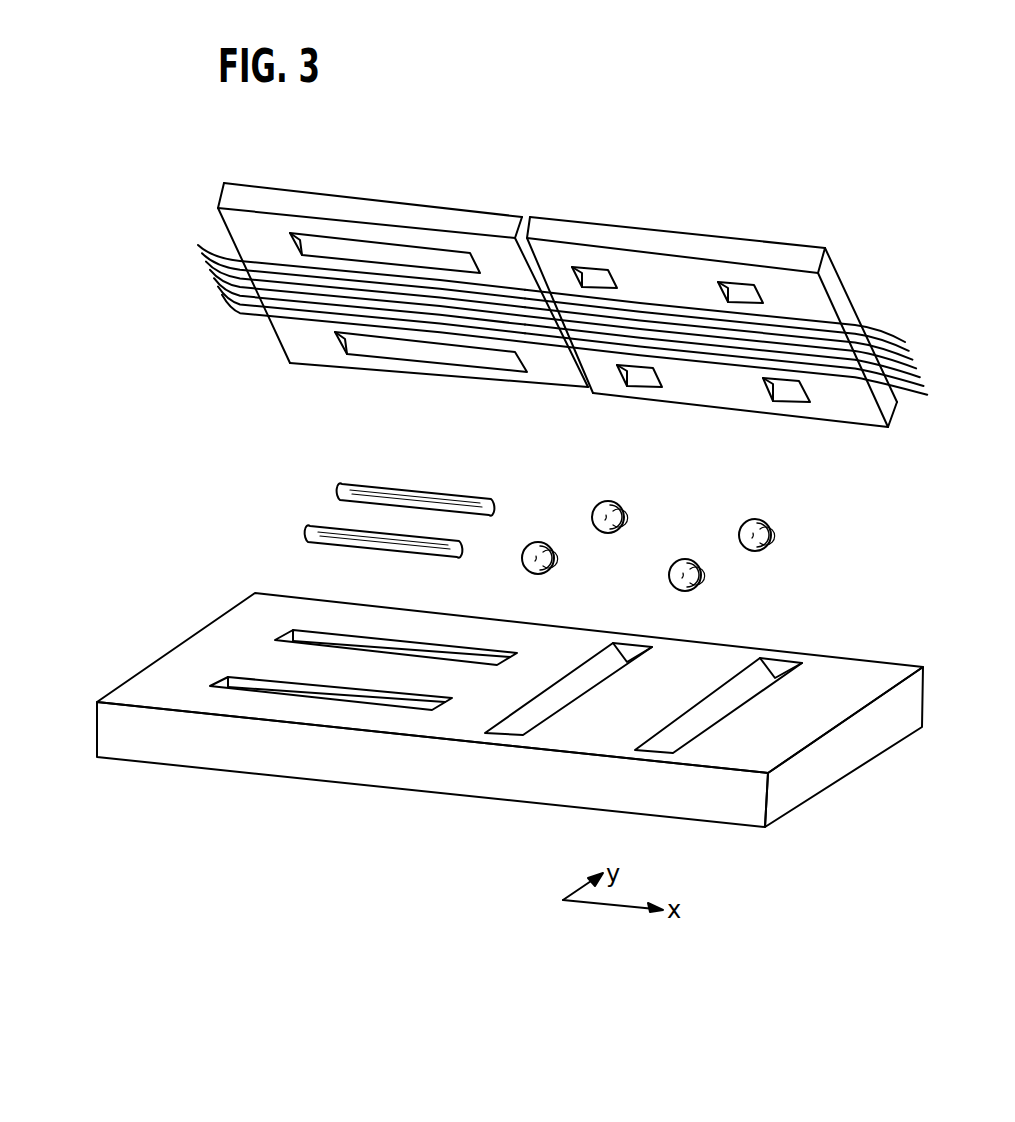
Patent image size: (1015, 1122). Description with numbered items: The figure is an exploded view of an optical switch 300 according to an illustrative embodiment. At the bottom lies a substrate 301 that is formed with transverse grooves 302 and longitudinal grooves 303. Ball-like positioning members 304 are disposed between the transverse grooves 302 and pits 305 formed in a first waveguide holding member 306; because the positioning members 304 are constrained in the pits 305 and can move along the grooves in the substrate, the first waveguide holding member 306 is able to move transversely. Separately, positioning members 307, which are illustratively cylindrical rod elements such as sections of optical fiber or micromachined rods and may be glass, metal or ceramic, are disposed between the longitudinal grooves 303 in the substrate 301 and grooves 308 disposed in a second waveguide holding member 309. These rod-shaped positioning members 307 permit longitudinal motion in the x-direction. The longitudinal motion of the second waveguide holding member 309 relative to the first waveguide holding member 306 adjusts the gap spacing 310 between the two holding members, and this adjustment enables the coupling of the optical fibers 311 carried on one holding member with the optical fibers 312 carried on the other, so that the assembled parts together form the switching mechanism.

The optical switch 300 is at (904, 175).
The substrate 301 is at (890, 707).
The transverse grooves 302 is at (757, 672).
The longitudinal grooves 303 is at (237, 680).
The positioning members 304 is at (623, 512).
The pits 305 is at (593, 270).
The first waveguide holding member 306 is at (693, 237).
The positioning members 307 is at (388, 485).
The grooves 308 is at (448, 263).
The second waveguide holding member 309 is at (345, 207).
The gap spacing 310 is at (530, 217).
The optical fibers 311 is at (200, 243).
The optical fibers 312 is at (880, 327).